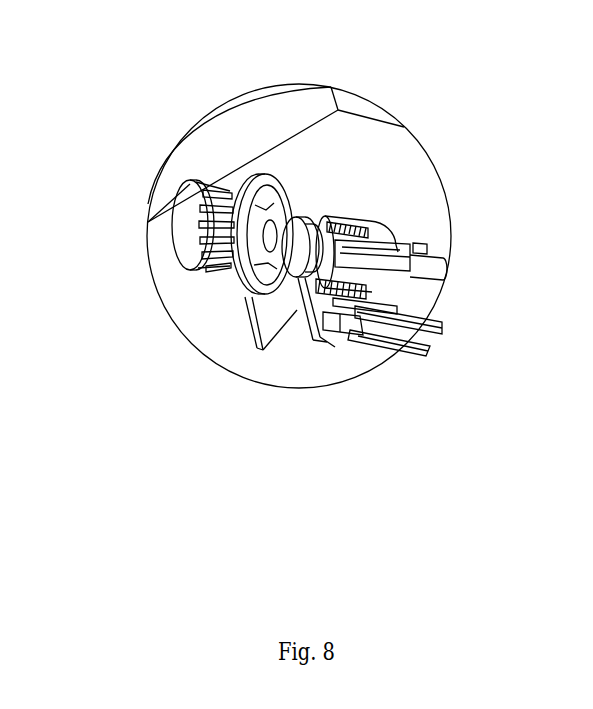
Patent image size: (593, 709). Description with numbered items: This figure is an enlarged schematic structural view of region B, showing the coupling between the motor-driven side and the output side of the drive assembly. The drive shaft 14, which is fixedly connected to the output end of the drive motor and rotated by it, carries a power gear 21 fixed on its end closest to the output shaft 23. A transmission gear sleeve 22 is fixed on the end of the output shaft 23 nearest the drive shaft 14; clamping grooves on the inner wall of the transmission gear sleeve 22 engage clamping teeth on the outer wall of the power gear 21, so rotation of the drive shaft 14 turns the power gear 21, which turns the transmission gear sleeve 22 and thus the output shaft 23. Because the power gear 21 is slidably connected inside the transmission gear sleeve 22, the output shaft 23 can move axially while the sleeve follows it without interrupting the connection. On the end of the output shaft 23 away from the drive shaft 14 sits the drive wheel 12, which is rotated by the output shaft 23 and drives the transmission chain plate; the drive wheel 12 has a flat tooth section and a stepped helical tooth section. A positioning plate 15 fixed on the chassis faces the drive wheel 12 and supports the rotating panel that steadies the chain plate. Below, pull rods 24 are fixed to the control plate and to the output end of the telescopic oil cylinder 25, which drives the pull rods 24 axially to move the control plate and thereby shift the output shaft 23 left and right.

The enlarged region B is at (441, 172).
The drive wheel 12 is at (190, 233).
The drive shaft 14 is at (430, 272).
The positioning plate 15 is at (253, 297).
The power gear 21 is at (420, 325).
The transmission gear sleeve 22 is at (353, 222).
The output shaft 23 is at (257, 238).
The pull rods 24 is at (347, 323).
The telescopic oil cylinder 25 is at (386, 340).